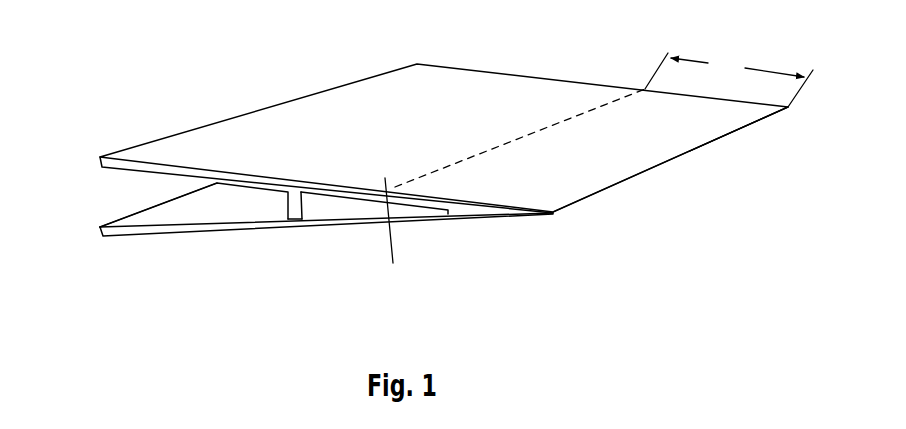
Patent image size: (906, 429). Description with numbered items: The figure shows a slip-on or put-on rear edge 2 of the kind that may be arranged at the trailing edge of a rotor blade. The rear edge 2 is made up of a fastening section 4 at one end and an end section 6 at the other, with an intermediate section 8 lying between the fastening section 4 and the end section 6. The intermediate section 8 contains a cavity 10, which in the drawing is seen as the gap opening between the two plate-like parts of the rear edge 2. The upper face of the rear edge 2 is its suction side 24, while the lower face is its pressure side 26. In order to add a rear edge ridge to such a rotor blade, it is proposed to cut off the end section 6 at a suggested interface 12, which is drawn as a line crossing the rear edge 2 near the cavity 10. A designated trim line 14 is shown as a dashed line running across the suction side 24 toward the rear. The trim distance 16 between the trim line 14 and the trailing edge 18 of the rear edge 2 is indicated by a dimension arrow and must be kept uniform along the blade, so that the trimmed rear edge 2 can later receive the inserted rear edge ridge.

The rear edge 2 is at (97, 256).
The fastening section 4 is at (96, 134).
The end section 6 is at (675, 179).
The intermediate section 8 is at (364, 238).
The cavity 10 is at (356, 207).
The suggested interface 12 is at (399, 232).
The trim line 14 is at (527, 133).
The trim distance 16 is at (729, 80).
The trailing edge 18 is at (718, 140).
The suction side 24 is at (265, 143).
The pressure side 26 is at (215, 246).